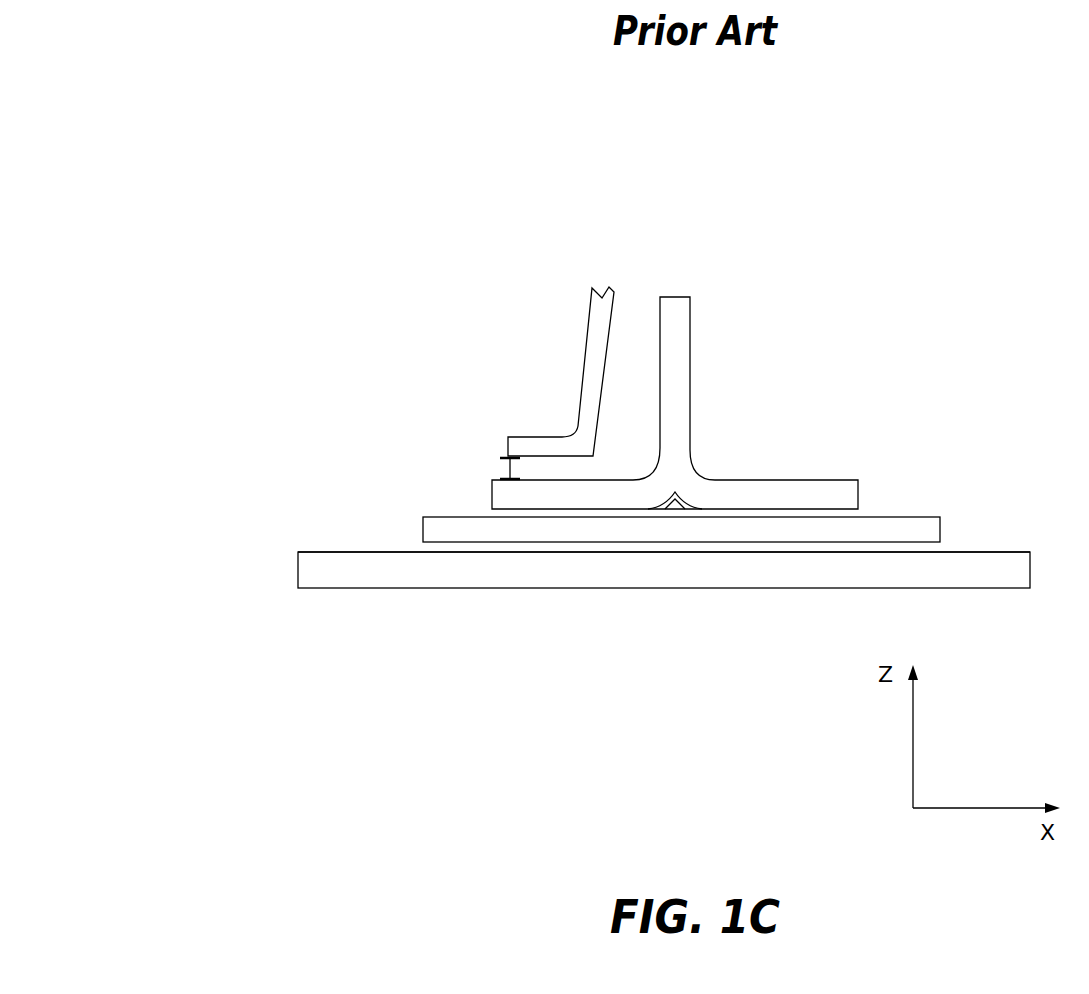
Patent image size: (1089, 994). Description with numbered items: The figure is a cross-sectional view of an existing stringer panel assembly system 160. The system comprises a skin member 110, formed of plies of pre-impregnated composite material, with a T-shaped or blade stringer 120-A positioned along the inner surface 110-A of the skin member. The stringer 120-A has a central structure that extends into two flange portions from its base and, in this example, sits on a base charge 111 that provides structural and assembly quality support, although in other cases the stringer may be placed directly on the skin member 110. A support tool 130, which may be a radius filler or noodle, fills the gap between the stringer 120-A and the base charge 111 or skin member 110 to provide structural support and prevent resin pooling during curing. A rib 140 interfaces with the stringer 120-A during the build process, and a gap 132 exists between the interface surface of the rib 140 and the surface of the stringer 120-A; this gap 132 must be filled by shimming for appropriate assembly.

The stringer panel assembly system 160 is at (150, 160).
The skin member 110 is at (362, 578).
The inner surface 110-A is at (326, 538).
The base charge 111 is at (923, 528).
The stringer 120-A is at (673, 348).
The support tool 130 is at (684, 505).
The gap 132 is at (484, 459).
The rib 140 is at (592, 368).